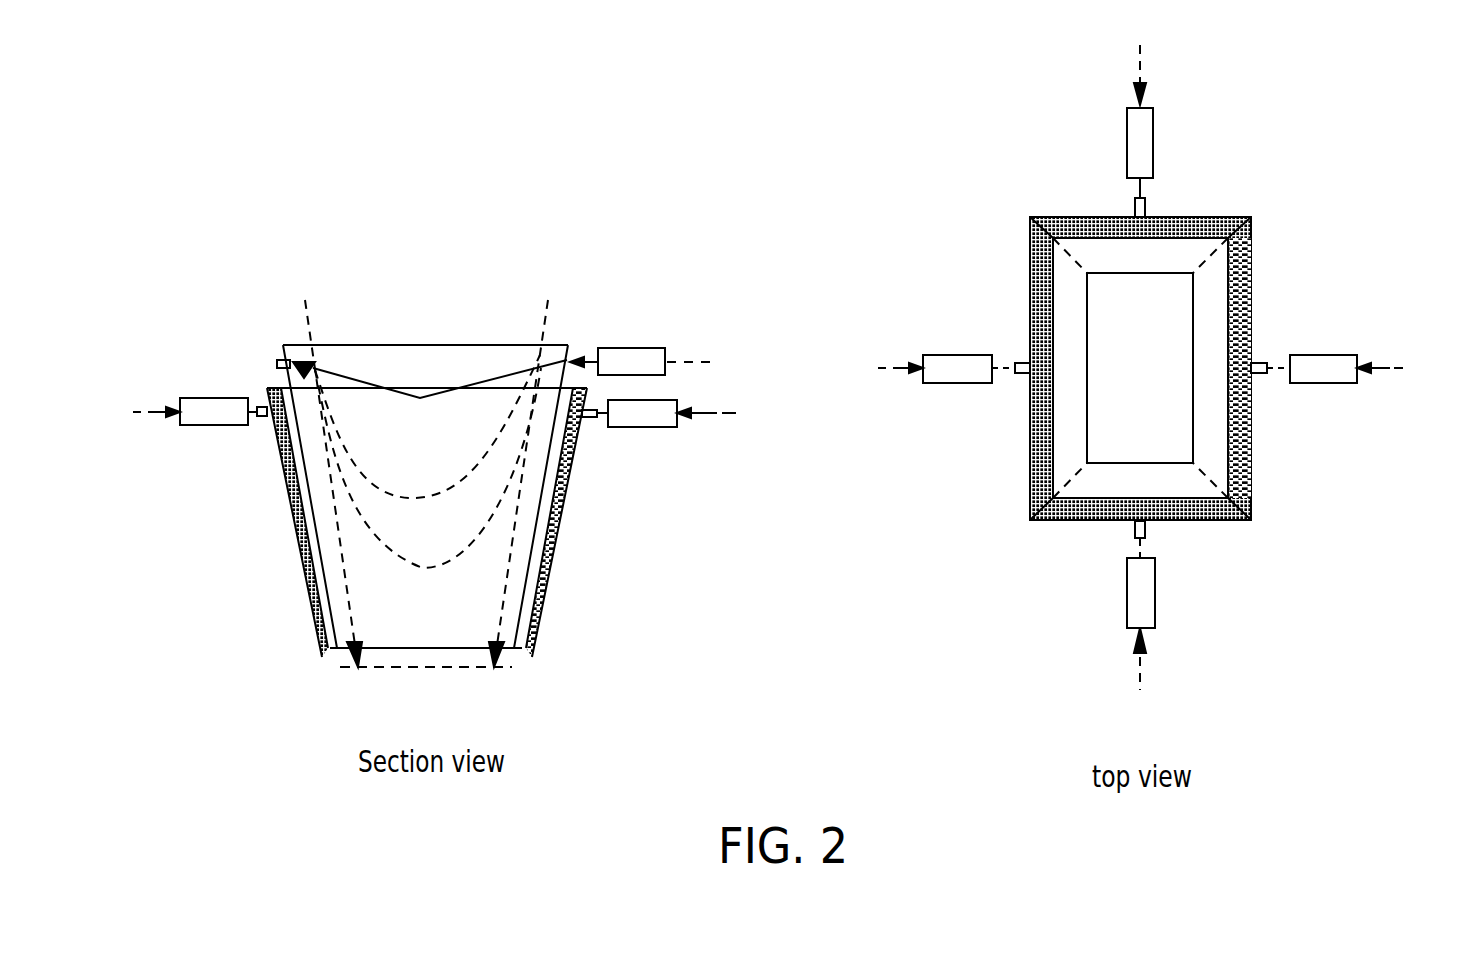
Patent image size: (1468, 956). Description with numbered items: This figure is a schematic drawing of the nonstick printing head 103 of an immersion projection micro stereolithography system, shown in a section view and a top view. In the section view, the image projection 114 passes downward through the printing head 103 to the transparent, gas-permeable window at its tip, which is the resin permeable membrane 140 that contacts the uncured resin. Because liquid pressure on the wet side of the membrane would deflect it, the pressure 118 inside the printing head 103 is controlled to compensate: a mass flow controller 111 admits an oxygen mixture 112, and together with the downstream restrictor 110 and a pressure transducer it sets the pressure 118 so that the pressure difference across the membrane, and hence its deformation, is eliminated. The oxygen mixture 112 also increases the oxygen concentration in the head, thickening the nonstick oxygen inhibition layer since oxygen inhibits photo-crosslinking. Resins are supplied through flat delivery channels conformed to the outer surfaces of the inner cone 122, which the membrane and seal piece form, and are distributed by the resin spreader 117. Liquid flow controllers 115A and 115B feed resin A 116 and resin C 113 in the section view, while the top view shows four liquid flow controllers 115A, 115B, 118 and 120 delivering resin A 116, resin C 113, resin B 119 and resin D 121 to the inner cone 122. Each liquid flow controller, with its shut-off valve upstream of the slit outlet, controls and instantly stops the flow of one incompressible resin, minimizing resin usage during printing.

The printing head 103 is at (282, 238).
The restrictor 110 is at (275, 360).
The mass flow controller 111 is at (652, 347).
The oxygen mixture 112 is at (667, 365).
The resin C 113 is at (1065, 392).
The image projection 114 is at (315, 313).
The liquid flow controller 115A is at (207, 427).
The liquid flow controller 115B is at (648, 428).
The resin A 116 is at (502, 393).
The resin spreader 117 is at (305, 587).
The pressure in the printing head 118 is at (450, 465).
The resin B 119 is at (1140, 682).
The liquid flow controller 120 is at (1142, 153).
The resin D 121 is at (1142, 57).
The inner cone 122 is at (1092, 252).
The resin permeable membrane 140 is at (510, 670).